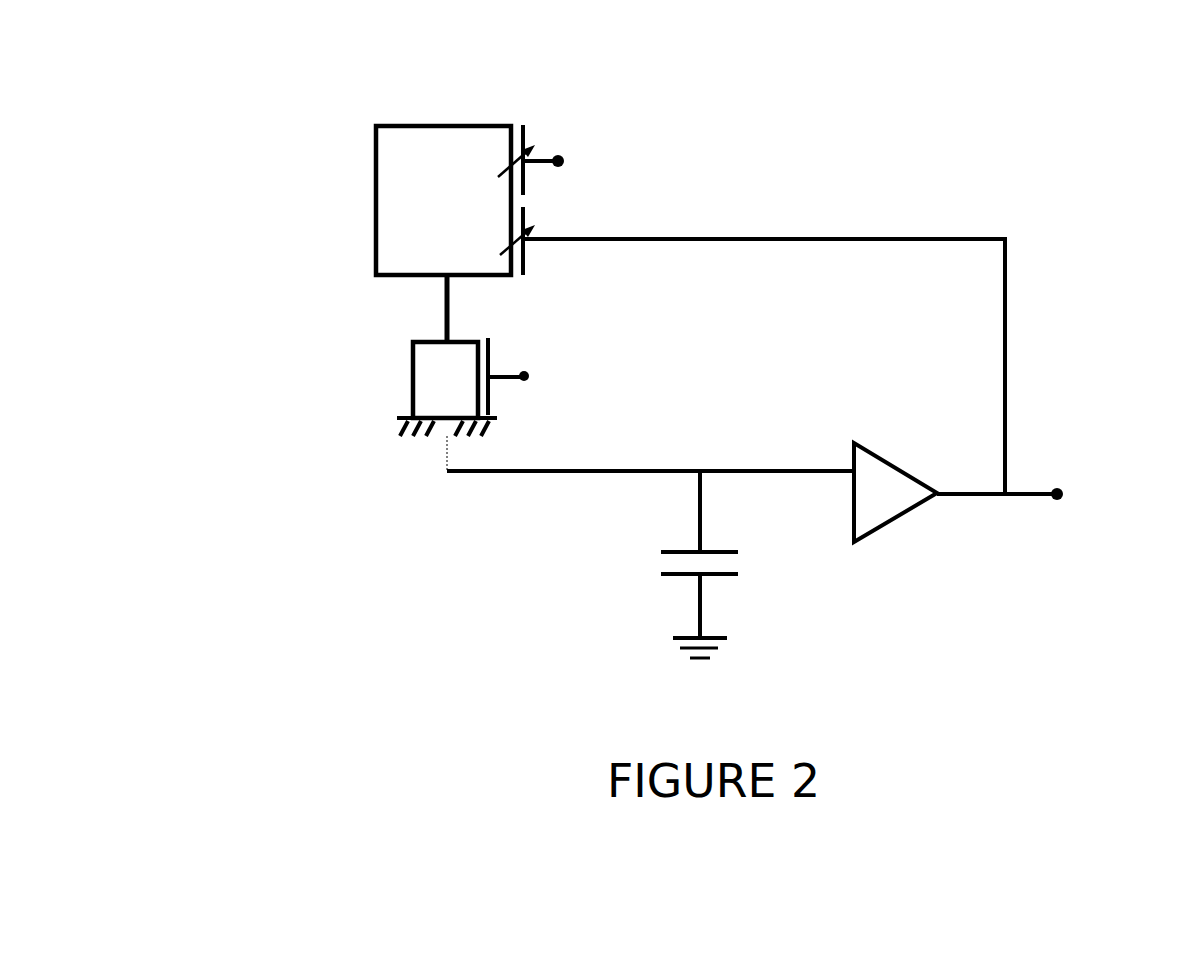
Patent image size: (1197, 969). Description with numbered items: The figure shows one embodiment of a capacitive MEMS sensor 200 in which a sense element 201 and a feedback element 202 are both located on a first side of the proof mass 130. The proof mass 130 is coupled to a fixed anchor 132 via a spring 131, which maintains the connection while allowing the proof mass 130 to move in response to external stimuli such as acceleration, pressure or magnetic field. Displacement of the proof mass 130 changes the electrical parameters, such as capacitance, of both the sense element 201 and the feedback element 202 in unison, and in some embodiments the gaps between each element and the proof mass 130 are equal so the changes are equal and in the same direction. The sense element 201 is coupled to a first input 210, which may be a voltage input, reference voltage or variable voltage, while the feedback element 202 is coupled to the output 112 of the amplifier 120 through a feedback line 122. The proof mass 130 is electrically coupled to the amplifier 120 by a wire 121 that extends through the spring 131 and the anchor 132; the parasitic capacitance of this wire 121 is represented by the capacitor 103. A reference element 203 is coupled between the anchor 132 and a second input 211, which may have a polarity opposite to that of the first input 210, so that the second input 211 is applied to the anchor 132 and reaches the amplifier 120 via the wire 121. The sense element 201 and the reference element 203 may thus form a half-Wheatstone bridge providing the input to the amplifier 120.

The capacitive MEMS sensor 200 is at (216, 96).
The proof mass 130 is at (374, 171).
The spring 131 is at (445, 312).
The anchor 132 is at (412, 377).
The sense element 201 is at (522, 124).
The first input 210 is at (567, 160).
The feedback element 202 is at (523, 275).
The reference element 203 is at (488, 338).
The second input 211 is at (531, 377).
The feedback line 122 is at (1007, 307).
The wire 121 is at (447, 471).
The capacitor 103 is at (740, 574).
The amplifier 120 is at (912, 513).
The output 112 is at (1064, 495).